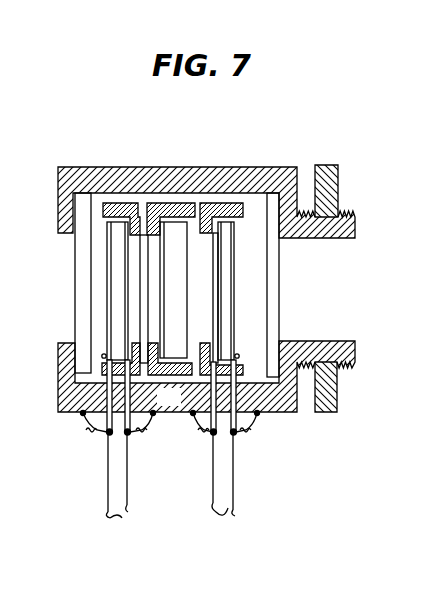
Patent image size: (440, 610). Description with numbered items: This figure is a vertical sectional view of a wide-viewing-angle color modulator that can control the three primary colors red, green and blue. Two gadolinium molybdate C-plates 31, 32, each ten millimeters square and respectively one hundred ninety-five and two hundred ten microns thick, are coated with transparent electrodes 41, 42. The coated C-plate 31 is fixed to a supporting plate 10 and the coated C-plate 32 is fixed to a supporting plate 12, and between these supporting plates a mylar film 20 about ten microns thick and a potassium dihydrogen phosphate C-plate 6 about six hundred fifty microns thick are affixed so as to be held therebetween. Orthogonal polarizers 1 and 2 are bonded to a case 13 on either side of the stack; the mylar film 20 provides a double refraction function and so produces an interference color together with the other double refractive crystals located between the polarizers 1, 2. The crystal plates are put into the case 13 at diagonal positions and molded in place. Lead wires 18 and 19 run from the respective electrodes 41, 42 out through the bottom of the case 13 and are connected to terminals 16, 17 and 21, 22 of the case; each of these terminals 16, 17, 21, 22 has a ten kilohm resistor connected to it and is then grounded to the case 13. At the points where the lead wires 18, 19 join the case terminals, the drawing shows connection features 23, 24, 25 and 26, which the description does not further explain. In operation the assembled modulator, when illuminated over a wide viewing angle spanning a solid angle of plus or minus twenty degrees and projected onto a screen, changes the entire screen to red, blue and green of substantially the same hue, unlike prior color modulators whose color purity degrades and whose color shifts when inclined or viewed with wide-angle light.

The polarizer 1 is at (82, 315).
The polarizer 2 is at (272, 329).
The KH2PO4 C-plate 6 is at (178, 266).
The supporting plate 10 is at (122, 203).
The supporting plate 12 is at (230, 211).
The case 13 is at (184, 168).
The terminal 16 is at (85, 423).
The terminal 17 is at (148, 408).
The lead wire 18 is at (120, 456).
The lead wire 19 is at (223, 452).
The mylar film 20 is at (145, 236).
The terminal 21 is at (200, 427).
The terminal 22 is at (240, 425).
The connection 23 is at (88, 434).
The connection 24 is at (140, 435).
The connection 25 is at (203, 433).
The connection 26 is at (245, 434).
The Gd2(MoO4)3 C-plate 31 is at (117, 275).
The Gd2(MoO4)3 C-plate 32 is at (228, 310).
The transparent electrode 41 is at (130, 257).
The transparent electrode 42 is at (232, 288).